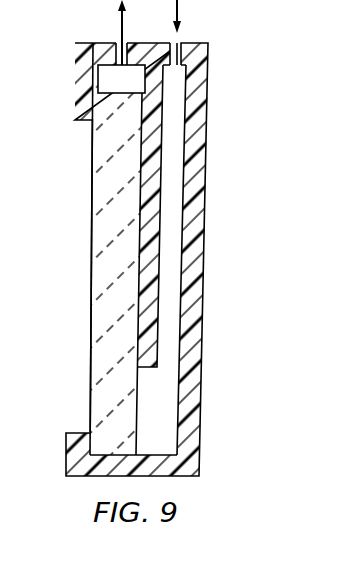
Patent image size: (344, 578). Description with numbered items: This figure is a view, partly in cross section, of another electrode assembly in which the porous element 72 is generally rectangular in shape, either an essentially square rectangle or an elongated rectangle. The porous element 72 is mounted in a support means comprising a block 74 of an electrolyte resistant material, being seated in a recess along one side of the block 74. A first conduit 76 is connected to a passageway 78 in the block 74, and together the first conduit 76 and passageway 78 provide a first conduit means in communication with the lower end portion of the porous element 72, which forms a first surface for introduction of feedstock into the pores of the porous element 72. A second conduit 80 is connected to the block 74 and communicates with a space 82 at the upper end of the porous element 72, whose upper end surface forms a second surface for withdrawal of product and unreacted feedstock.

The porous element 72 is at (90, 313).
The block 74 is at (202, 313).
The first conduit 76 is at (175, 50).
The passageway 78 is at (171, 207).
The second conduit 80 is at (122, 50).
The space 82 is at (109, 90).